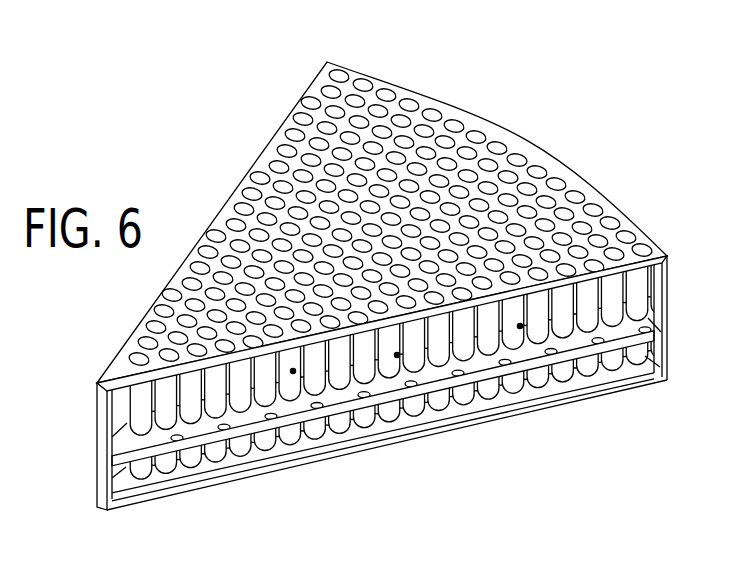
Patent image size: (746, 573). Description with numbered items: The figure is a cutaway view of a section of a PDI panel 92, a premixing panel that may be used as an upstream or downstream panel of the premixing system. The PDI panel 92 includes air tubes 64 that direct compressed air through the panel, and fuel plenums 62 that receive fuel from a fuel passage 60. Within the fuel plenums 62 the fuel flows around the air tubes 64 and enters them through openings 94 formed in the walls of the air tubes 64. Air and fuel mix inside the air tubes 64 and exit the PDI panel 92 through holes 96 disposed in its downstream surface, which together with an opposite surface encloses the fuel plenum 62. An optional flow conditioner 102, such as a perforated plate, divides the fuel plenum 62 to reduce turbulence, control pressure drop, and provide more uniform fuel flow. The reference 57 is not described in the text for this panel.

The PDI panel 92 is at (182, 76).
The holes 96 is at (512, 127).
The frame 57 is at (668, 292).
The air tubes 64 is at (131, 420).
The fuel passage 60 is at (437, 393).
The fuel plenums 62 is at (163, 451).
The openings 94 is at (294, 374).
The flow conditioner 102 is at (233, 434).